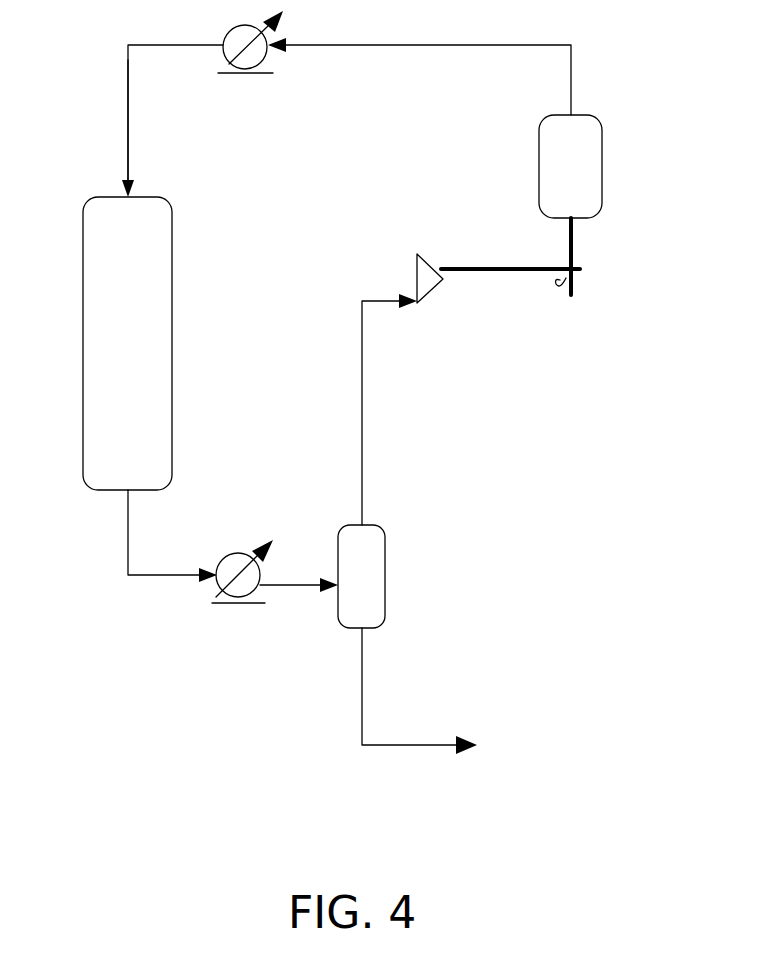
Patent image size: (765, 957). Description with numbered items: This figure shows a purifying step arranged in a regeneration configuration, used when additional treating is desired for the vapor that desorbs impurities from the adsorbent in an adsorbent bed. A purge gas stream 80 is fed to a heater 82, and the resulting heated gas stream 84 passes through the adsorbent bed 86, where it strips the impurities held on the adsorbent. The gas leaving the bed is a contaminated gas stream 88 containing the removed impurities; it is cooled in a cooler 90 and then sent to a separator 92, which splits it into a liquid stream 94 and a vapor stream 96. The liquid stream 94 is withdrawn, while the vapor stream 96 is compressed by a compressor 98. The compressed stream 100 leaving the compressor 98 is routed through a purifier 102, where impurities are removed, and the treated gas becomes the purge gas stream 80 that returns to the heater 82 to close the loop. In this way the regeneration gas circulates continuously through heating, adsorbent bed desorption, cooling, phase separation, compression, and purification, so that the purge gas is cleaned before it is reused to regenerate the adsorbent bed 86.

The purge gas stream 80 is at (560, 45).
The heater 82 is at (245, 69).
The heated gas stream 84 is at (126, 117).
The adsorbent bed 86 is at (127, 343).
The contaminated gas stream 88 is at (126, 531).
The cooler 90 is at (238, 553).
The separator 92 is at (361, 576).
The liquid stream 94 is at (368, 678).
The vapor stream 96 is at (360, 406).
The compressor 98 is at (430, 257).
The compressed stream 100 is at (566, 277).
The purifier 102 is at (570, 166).